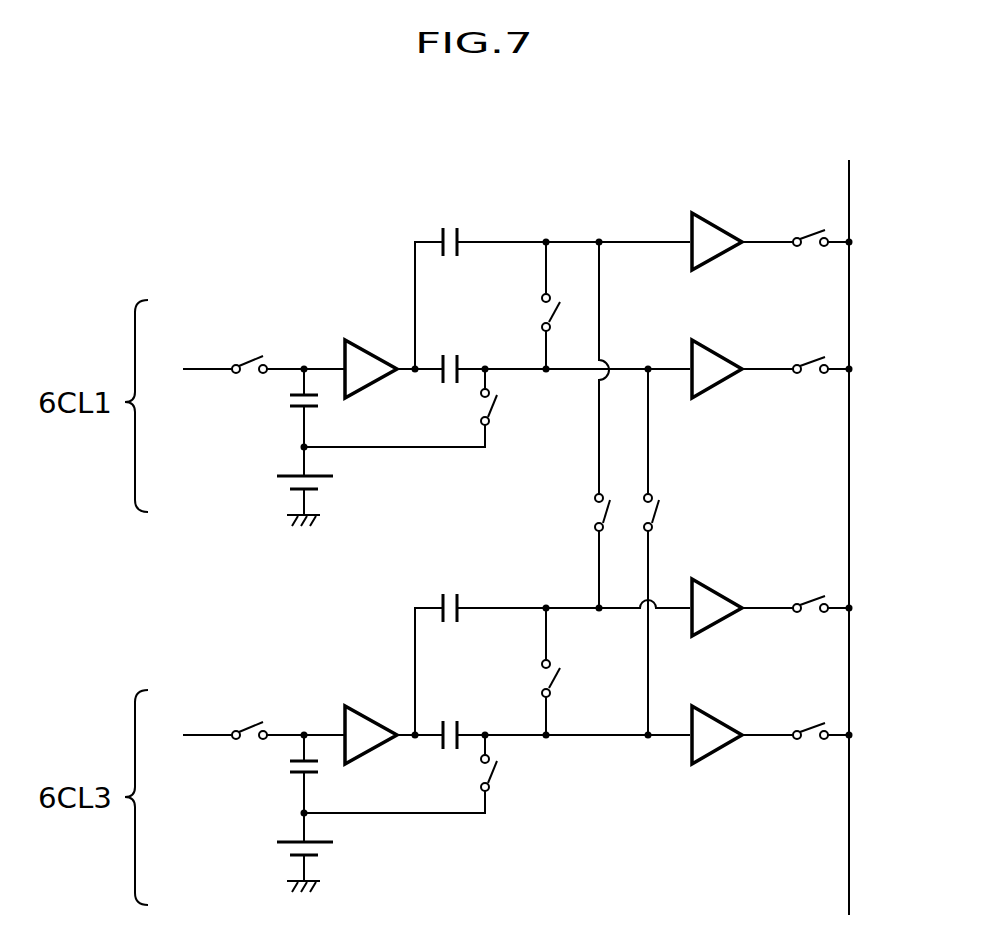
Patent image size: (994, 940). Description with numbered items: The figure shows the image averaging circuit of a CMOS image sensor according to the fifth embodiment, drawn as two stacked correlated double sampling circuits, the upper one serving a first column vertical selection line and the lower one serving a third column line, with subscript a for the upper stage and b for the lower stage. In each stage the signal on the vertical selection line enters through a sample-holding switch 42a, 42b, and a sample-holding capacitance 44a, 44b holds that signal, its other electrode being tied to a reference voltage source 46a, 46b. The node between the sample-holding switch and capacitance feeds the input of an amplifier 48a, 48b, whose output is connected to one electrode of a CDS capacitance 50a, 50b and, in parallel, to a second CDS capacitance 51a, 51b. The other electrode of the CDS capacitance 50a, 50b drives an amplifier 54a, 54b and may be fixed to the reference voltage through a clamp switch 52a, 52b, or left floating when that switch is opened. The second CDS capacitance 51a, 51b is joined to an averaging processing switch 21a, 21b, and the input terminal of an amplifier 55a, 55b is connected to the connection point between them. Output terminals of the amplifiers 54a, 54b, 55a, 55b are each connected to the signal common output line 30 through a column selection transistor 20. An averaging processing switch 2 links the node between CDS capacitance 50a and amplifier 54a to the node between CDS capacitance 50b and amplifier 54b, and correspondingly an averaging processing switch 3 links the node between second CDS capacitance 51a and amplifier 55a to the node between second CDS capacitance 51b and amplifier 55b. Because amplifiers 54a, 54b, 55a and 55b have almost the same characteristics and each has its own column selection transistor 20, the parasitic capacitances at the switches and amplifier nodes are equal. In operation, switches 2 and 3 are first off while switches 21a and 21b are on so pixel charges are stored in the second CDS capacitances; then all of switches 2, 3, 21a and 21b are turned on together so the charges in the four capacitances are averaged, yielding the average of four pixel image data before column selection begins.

The averaging processing switch 2 is at (655, 510).
The averaging processing switch 3 is at (590, 509).
The column selection transistor 20 is at (815, 228).
The averaging processing switch 21a is at (538, 310).
The averaging processing switch 21b is at (538, 676).
The signal common output line 30 is at (852, 303).
The sample-holding switch 42a is at (253, 352).
The sample-holding switch 42b is at (253, 718).
The sample-holding capacitance 44a is at (322, 400).
The sample-holding capacitance 44b is at (322, 766).
The reference voltage source 46a is at (325, 488).
The reference voltage source 46b is at (325, 854).
The amplifier 48a is at (373, 348).
The amplifier 48b is at (373, 714).
The CDS capacitance 50a is at (452, 350).
The CDS capacitance 50b is at (452, 716).
The second CDS capacitance 51a is at (452, 225).
The second CDS capacitance 51b is at (452, 591).
The clamp switch 52a is at (492, 425).
The clamp switch 52b is at (492, 791).
The amplifier 54a is at (720, 358).
The amplifier 54b is at (720, 724).
The amplifier 55a is at (720, 230).
The amplifier 55b is at (720, 596).